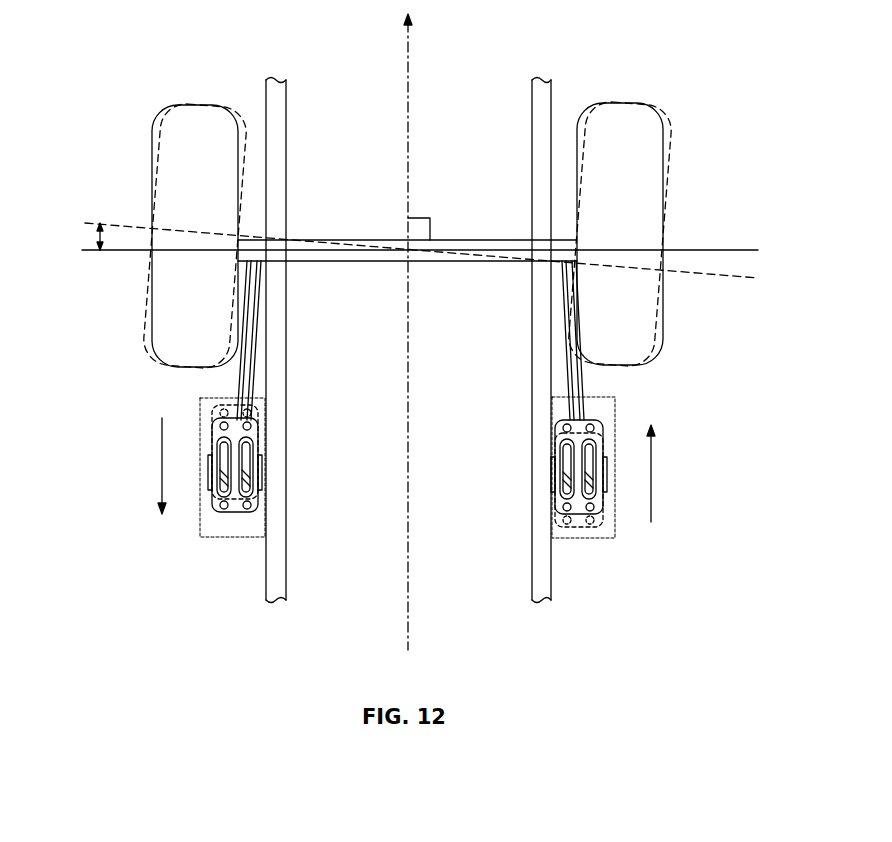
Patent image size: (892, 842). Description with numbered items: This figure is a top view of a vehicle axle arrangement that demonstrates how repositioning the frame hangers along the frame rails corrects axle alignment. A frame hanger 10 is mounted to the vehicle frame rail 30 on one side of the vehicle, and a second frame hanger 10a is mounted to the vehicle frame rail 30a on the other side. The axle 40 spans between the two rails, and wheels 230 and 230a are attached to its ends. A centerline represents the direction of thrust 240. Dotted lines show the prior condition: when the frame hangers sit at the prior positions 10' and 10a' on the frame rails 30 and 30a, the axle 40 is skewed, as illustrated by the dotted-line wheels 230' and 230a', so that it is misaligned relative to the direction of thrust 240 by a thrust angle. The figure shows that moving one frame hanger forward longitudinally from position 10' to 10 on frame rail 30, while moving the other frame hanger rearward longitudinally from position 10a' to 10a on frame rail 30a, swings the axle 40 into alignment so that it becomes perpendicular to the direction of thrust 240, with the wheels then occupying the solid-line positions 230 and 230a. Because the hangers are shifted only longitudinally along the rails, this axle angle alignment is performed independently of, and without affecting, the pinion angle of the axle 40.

The frame hanger 10 is at (603, 456).
The prior position of frame hanger 10' is at (597, 499).
The frame hanger 10a is at (203, 481).
The prior position of frame hanger 10a' is at (194, 436).
The vehicle frame rail 30 is at (546, 584).
The vehicle frame rail 30a is at (266, 580).
The axle 40 is at (483, 249).
The wheel 230 is at (624, 222).
The wheel in misaligned position 230' is at (657, 227).
The wheel 230a is at (165, 224).
The wheel in misaligned position 230a' is at (203, 208).
The direction of thrust 240 is at (408, 62).